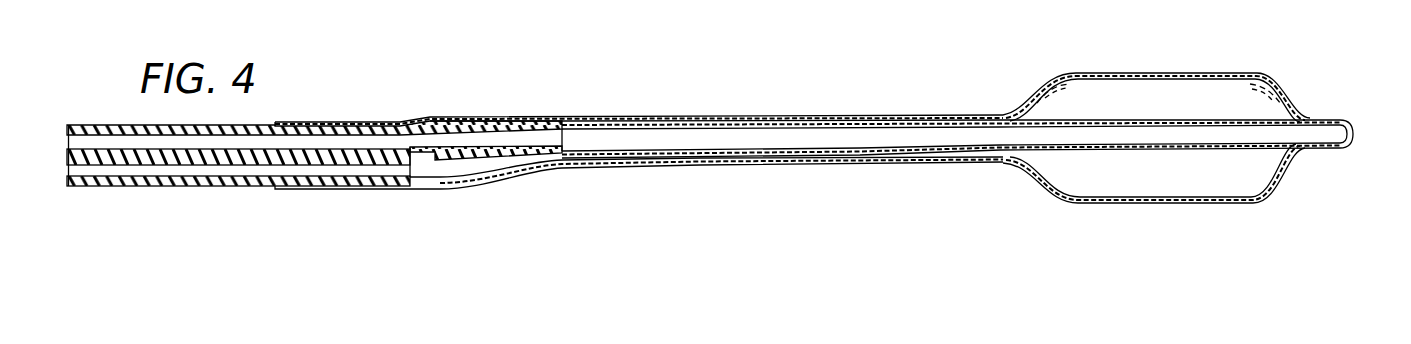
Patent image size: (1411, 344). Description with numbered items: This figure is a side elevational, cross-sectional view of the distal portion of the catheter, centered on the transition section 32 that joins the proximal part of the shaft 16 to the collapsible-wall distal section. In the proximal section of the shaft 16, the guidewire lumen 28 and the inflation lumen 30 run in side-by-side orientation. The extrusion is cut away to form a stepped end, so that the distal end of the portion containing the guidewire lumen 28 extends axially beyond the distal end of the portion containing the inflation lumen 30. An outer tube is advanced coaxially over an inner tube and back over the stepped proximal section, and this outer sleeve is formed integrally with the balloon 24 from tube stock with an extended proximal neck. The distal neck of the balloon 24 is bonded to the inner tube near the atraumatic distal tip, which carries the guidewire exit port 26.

The catheter body 16 is at (162, 183).
The balloon 24 is at (1180, 73).
The guidewire exit port 26 is at (1349, 136).
The guidewire lumen 28 is at (737, 134).
The inflation lumen 30 is at (750, 162).
The transition section 32 is at (617, 200).